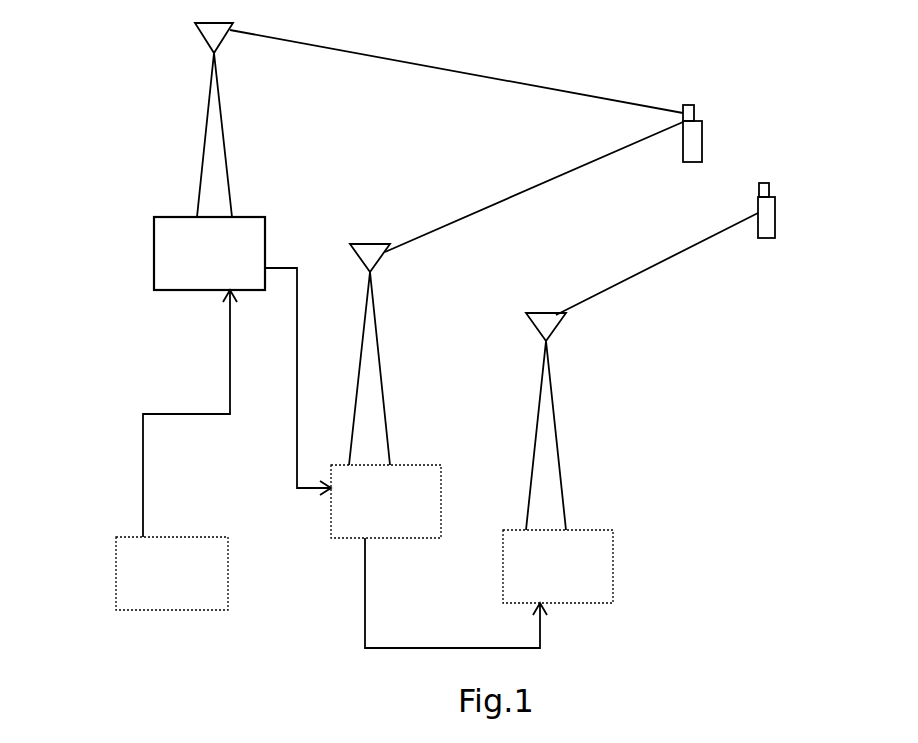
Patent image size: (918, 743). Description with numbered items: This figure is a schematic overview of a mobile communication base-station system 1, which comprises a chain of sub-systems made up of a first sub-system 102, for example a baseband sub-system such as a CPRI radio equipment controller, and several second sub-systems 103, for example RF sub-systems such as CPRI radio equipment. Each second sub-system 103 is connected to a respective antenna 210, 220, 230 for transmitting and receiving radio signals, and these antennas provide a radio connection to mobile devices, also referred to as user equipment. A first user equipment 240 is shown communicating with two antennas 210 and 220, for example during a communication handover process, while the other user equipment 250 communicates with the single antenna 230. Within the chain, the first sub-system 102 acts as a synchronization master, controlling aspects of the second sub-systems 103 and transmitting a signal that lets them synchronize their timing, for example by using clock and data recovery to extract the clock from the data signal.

The mobile communication base-station system 1 is at (714, 361).
The first sub-system 102 is at (116, 560).
The second sub-system 103 is at (155, 260).
The antenna 210 is at (215, 148).
The antenna 220 is at (372, 385).
The antenna 230 is at (557, 446).
The first user equipment 240 is at (697, 148).
The user equipment 250 is at (770, 225).